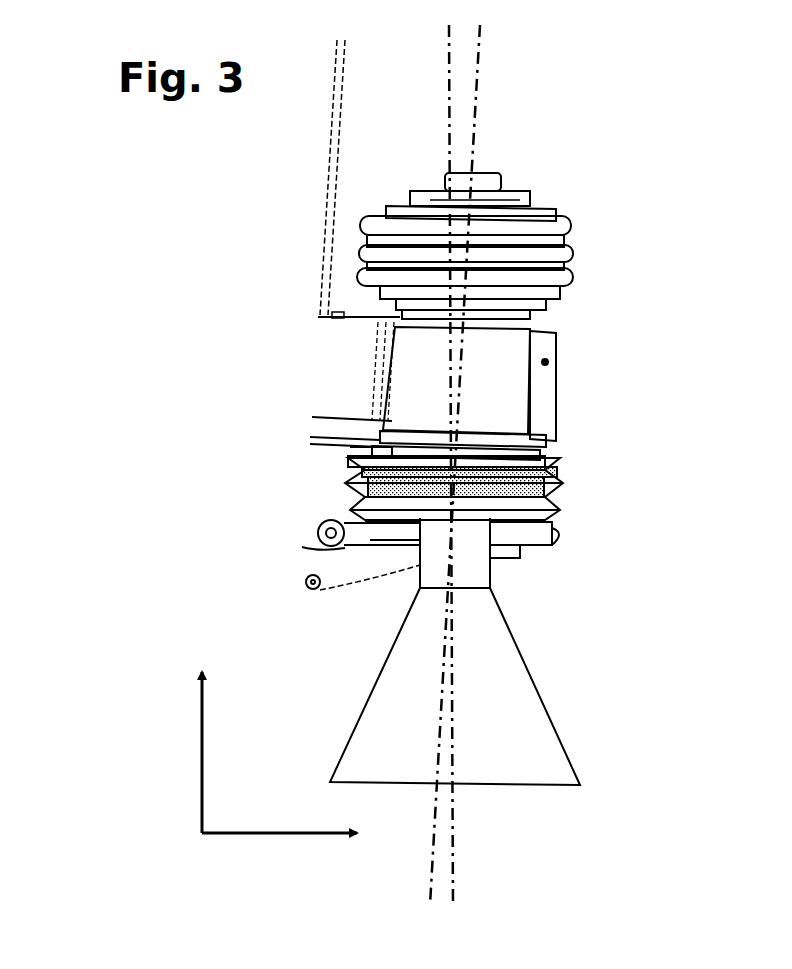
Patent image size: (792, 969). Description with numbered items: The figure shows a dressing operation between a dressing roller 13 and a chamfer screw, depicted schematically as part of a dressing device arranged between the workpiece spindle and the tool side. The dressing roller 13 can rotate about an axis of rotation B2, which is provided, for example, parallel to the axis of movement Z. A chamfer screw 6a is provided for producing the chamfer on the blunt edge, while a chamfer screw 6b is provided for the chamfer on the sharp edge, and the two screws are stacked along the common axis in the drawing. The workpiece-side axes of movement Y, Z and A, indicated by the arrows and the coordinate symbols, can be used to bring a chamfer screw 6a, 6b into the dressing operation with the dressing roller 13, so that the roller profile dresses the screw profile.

The chamfer screw 6a is at (345, 480).
The chamfer screw 6b is at (523, 242).
The dressing roller 13 is at (555, 473).
The axis of movement A is at (315, 32).
The axis of rotation B2 is at (462, 855).
The axis of movement Z is at (179, 752).
The axis of movement Y is at (279, 864).